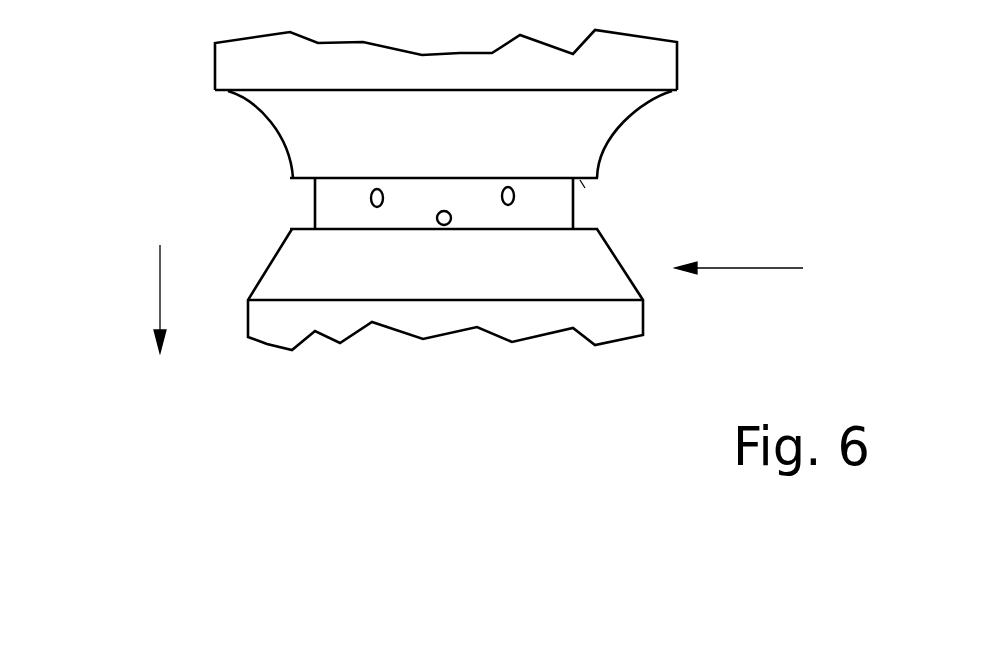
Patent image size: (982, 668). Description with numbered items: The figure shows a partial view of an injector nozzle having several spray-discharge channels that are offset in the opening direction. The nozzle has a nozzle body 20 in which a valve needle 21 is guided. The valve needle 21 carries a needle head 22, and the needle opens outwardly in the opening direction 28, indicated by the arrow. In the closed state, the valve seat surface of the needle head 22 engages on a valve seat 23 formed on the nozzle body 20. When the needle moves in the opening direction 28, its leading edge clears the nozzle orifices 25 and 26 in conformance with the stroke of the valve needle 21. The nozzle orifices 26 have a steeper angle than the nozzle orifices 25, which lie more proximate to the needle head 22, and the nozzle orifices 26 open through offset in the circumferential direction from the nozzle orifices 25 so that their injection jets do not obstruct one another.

The nozzle body 20 is at (658, 69).
The valve needle 21 is at (774, 260).
The needle head 22 is at (525, 320).
The valve seat 23 is at (598, 185).
The nozzle orifices 25 is at (443, 225).
The nozzle orifices 26 is at (274, 158).
The opening direction 28 is at (160, 302).